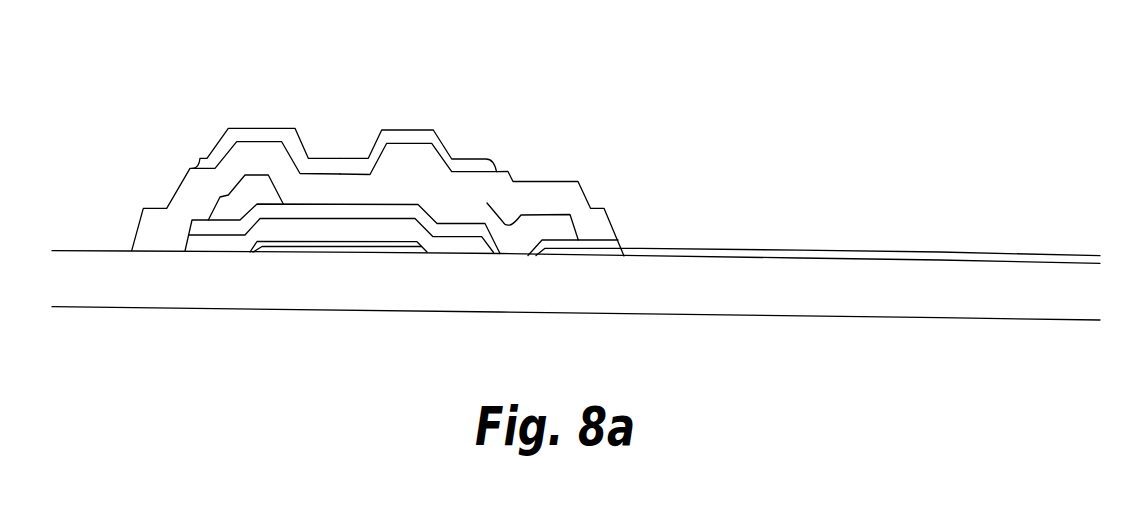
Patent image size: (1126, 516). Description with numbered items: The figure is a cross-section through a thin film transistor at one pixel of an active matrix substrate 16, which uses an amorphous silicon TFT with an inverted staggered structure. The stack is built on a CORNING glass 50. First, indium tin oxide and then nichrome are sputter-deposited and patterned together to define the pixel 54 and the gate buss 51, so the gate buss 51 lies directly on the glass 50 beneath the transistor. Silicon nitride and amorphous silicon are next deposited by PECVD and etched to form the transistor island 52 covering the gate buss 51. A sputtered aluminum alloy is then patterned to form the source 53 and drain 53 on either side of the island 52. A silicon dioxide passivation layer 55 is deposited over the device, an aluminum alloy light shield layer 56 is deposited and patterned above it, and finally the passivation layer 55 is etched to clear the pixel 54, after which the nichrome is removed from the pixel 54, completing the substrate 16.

The active matrix substrate 16 is at (718, 63).
The glass 50 is at (685, 296).
The gate buss 51 is at (338, 269).
The transistor island 52 is at (339, 228).
The source and drain 53 is at (344, 173).
The pixel 54 is at (818, 215).
The passivation layer 55 is at (236, 154).
The light shield layer 56 is at (482, 159).